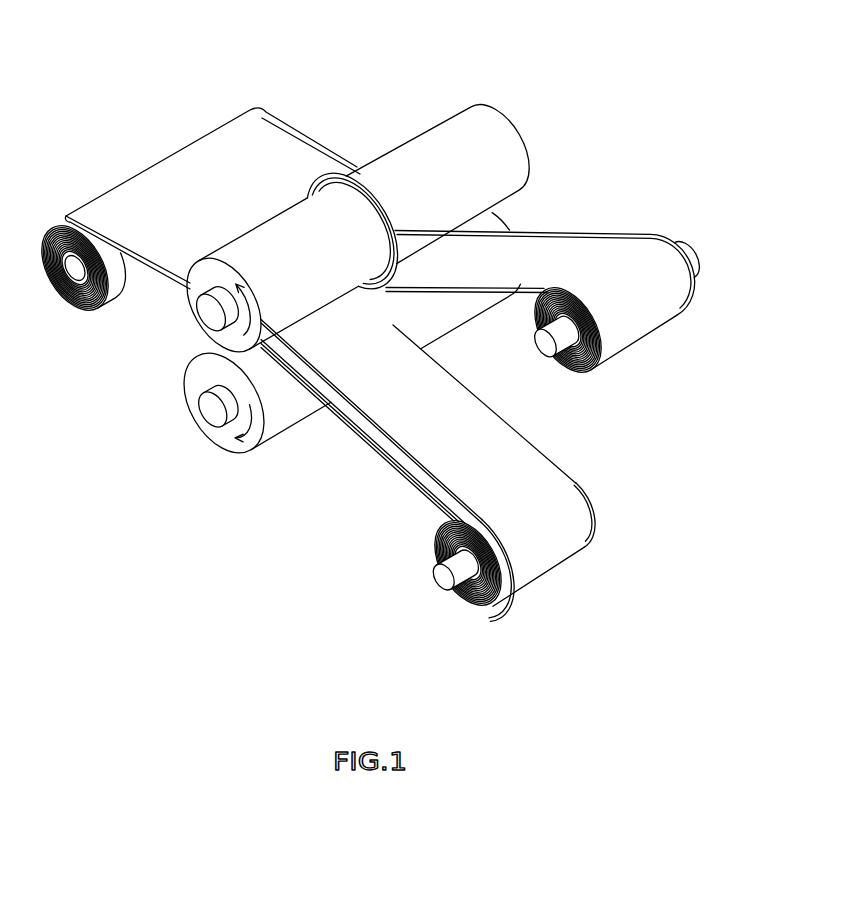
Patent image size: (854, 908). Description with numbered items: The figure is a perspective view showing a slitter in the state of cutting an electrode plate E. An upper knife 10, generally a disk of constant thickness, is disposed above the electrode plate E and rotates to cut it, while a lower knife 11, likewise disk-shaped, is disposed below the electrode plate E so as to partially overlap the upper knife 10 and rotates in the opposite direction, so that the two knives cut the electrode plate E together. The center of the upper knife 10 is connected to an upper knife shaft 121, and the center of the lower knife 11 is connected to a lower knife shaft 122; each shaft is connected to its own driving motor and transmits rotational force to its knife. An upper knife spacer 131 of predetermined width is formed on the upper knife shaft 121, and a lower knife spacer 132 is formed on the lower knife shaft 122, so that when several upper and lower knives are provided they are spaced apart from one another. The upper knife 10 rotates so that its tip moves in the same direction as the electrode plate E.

The upper knife 10 is at (335, 180).
The lower knife 11 is at (398, 312).
The upper knife shaft 121 is at (212, 313).
The lower knife shaft 122 is at (215, 407).
The upper knife spacer 131 is at (270, 242).
The lower knife spacer 132 is at (298, 412).
The electrode plate E is at (107, 200).